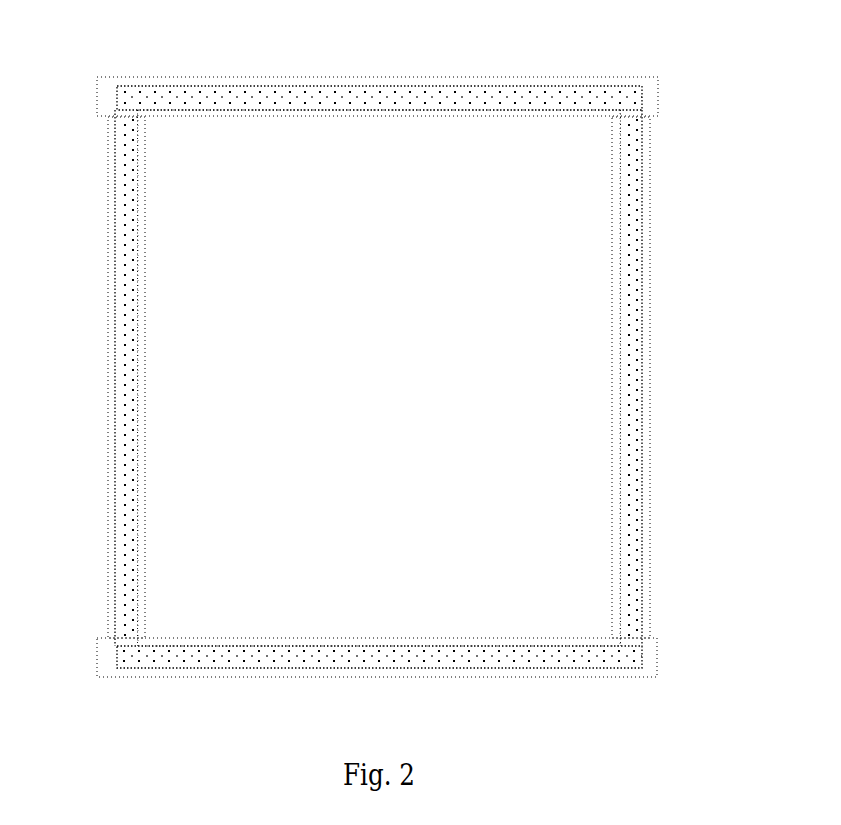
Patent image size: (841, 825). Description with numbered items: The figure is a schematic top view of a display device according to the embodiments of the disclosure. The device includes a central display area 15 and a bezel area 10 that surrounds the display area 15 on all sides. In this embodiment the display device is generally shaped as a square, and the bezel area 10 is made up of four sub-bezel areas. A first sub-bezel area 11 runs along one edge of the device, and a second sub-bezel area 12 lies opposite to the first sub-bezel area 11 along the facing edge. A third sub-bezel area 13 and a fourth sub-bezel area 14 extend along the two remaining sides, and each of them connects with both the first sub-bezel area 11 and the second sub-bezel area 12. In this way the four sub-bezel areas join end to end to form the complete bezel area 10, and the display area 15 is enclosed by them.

The bezel area 10 is at (628, 257).
The first sub-bezel area 11 is at (530, 677).
The second sub-bezel area 12 is at (483, 76).
The third sub-bezel area 13 is at (108, 382).
The fourth sub-bezel area 14 is at (650, 375).
The display area 15 is at (562, 425).